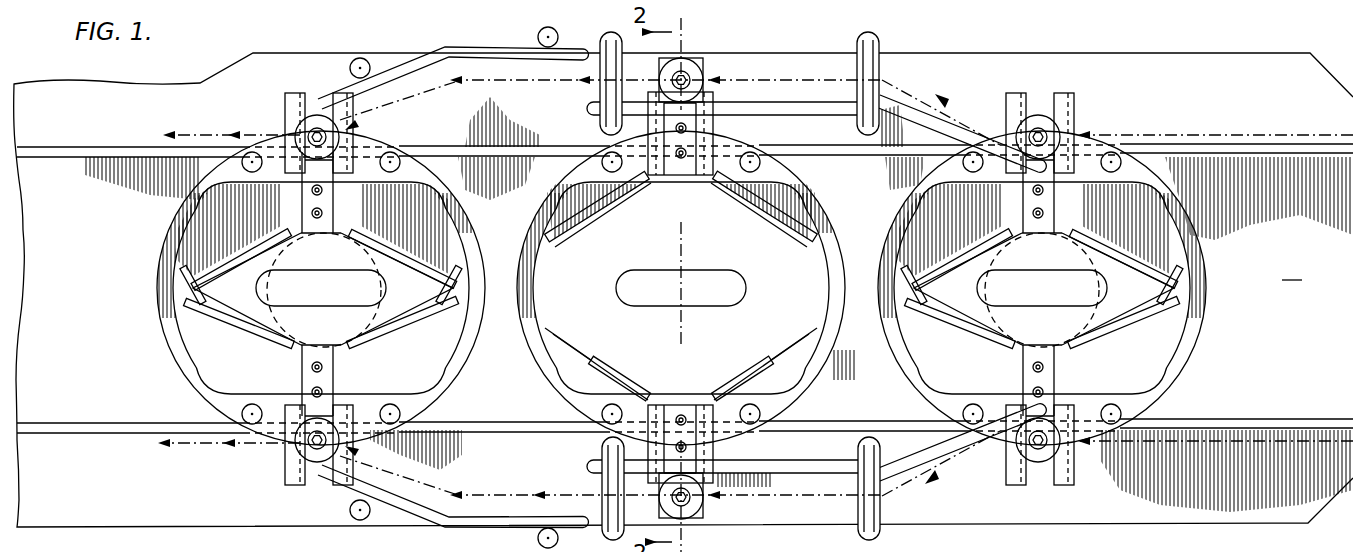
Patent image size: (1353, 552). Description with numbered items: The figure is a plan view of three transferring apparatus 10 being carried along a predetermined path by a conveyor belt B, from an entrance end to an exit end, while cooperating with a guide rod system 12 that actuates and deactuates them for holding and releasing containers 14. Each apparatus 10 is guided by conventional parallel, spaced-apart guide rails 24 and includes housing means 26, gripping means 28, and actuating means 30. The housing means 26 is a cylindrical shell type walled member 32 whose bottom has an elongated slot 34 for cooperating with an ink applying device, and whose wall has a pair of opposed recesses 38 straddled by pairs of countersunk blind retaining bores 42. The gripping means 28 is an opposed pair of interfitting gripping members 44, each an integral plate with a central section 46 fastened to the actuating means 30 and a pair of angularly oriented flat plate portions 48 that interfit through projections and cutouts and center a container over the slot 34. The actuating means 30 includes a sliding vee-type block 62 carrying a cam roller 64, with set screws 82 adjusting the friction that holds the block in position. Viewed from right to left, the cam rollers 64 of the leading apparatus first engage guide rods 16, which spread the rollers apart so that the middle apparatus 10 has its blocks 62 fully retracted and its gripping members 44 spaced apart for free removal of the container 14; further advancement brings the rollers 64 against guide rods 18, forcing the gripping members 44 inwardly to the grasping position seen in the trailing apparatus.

The transferring apparatus 10 is at (468, 392).
The guide rod system 12 is at (1265, 50).
The container 14 is at (405, 233).
The guide rod 16 is at (790, 112).
The guide rod 18 is at (455, 52).
The guide rail 24 is at (1262, 145).
The housing means 26 is at (473, 240).
The gripping means 28 is at (292, 210).
The actuating means 30 is at (284, 118).
The cylindrical shell type walled member 32 is at (175, 370).
The elongated slot 34 is at (304, 307).
The recess 38 is at (354, 137).
The countersunk blind retaining bore 42 is at (240, 165).
The gripping member 44 is at (257, 325).
The central section 46 is at (340, 234).
The angularly oriented flat plate portion 48 is at (412, 262).
The sliding vee-type block 62 is at (312, 233).
The cam roller 64 is at (390, 60).
The set screw 82 is at (324, 391).